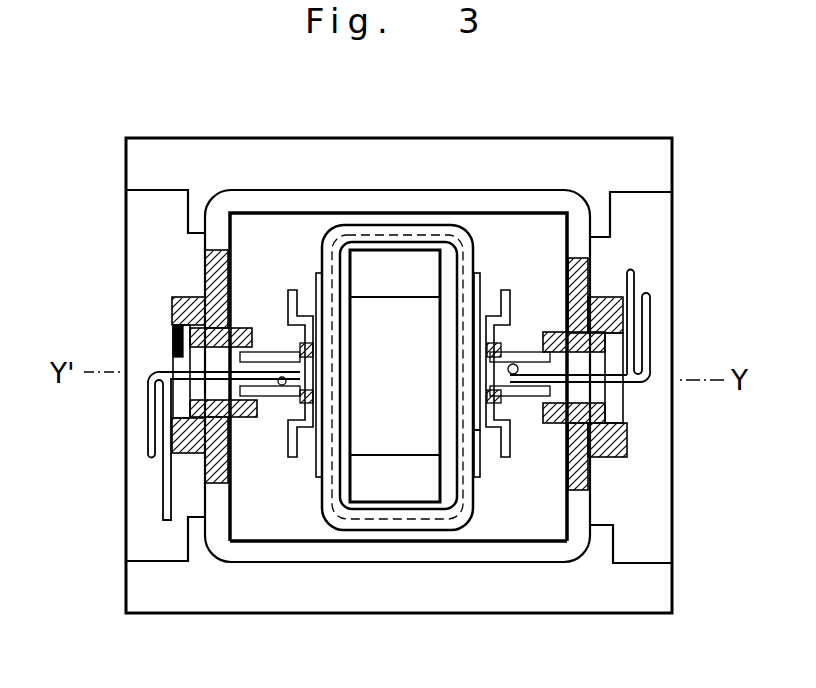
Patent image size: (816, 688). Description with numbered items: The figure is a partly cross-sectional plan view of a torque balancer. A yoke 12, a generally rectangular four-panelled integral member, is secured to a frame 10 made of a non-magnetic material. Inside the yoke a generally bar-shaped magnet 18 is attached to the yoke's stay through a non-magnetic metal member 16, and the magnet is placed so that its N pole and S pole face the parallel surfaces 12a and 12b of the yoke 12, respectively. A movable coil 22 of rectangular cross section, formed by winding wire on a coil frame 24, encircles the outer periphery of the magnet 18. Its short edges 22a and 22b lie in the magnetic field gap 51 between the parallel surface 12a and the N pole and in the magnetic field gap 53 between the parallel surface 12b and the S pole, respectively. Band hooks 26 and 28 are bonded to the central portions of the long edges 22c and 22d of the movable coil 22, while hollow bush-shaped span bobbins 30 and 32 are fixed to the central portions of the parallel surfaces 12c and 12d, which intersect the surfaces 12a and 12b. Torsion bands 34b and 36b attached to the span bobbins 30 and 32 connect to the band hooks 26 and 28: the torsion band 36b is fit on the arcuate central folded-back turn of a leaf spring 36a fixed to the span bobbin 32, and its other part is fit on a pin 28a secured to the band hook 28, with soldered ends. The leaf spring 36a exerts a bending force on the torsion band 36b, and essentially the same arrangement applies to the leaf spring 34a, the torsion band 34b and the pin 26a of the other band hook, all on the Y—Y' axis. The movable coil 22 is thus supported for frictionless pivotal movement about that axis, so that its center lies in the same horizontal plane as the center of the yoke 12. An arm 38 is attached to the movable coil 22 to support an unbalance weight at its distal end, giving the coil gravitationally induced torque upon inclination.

The frame 10 is at (553, 138).
The yoke 12 is at (320, 182).
The parallel surface of the yoke 12a is at (413, 195).
The parallel surface of the yoke 12b is at (327, 553).
The parallel surface of the yoke 12c is at (210, 472).
The parallel surface of the yoke 12d is at (600, 477).
The non-magnetic metal member 16 is at (358, 430).
The magnet 18 is at (427, 267).
The movable coil 22 is at (319, 248).
The short edge of the movable coil 22a is at (383, 223).
The short edge of the movable coil 22b is at (425, 525).
The long edge of the movable coil 22c is at (320, 285).
The long edge of the movable coil 22d is at (478, 280).
The coil frame 24 is at (472, 507).
The band hook 26 is at (278, 404).
The pin 26a is at (290, 318).
The band hook 28 is at (520, 407).
The pin 28a is at (516, 362).
The span bobbin 30 is at (183, 295).
The span bobbin 32 is at (600, 300).
The leaf spring 34a is at (167, 465).
The torsion band 34b is at (195, 362).
The leaf spring 36a is at (633, 270).
The torsion band 36b is at (602, 392).
The arm 38 is at (482, 440).
The magnetic field gap 51 is at (427, 220).
The magnetic field gap 53 is at (387, 537).